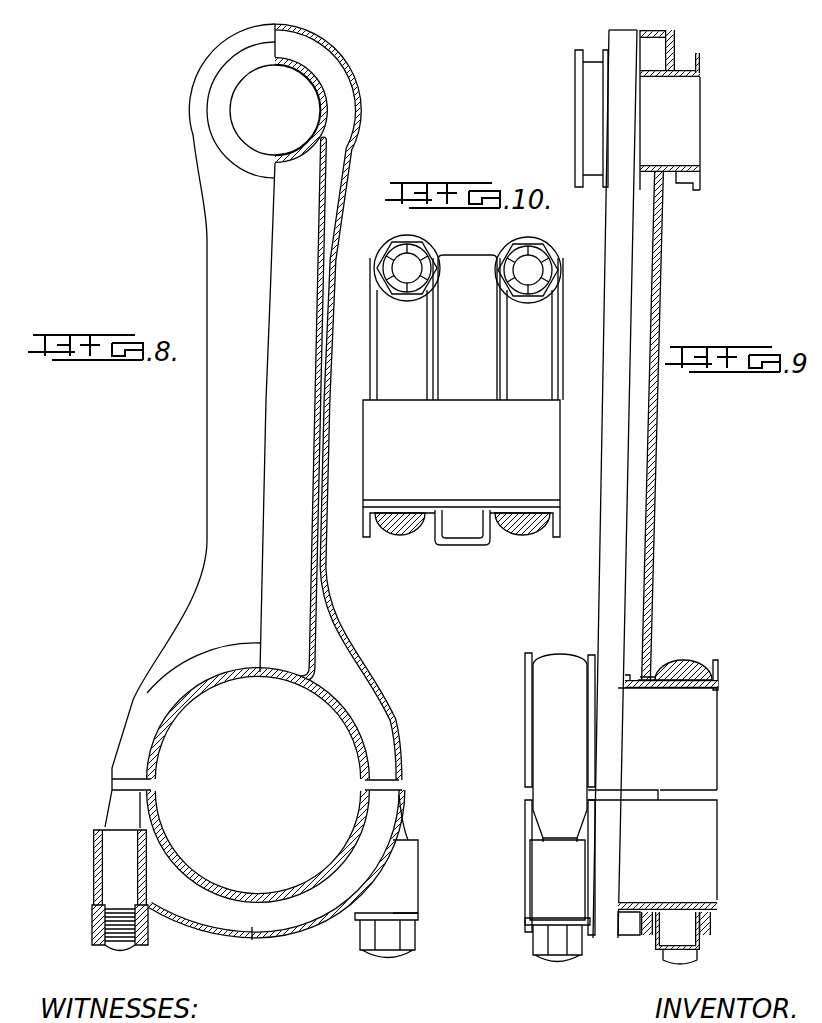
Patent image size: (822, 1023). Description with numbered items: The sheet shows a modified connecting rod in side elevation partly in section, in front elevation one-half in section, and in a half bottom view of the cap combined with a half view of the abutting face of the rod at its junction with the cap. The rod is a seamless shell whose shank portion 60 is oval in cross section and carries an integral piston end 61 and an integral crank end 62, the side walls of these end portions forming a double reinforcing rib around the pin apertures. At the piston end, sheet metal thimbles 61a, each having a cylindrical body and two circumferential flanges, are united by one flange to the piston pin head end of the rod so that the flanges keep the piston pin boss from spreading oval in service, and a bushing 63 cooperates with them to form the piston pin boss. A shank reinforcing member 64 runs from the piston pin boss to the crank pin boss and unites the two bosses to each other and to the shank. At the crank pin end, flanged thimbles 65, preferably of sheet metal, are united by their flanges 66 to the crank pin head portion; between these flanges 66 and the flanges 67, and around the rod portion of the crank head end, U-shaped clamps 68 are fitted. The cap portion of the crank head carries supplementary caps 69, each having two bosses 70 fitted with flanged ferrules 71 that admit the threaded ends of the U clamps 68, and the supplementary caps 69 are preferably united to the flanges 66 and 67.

In FIG. 8, the seamless shank portion 60 is at (190, 425).
In FIG. 9, the seamless shank portion 60 is at (615, 484).
In FIG. 8, the piston end 61 is at (236, 50).
In FIG. 9, the piston end 61 is at (628, 72).
In FIG. 9, the sheet metal thimbles 61a is at (593, 68).
In FIG. 8, the crank end 62 is at (203, 664).
In FIG. 9, the bushing 63 is at (670, 110).
In FIG. 8, the shank reinforcing member 64 is at (302, 409).
In FIG. 9, the shank reinforcing member 64 is at (657, 290).
In FIG. 9, the flanged thimbles 65 is at (540, 832).
In FIG. 10, the flanges 66 is at (493, 545).
In FIG. 9, the flanges 66 is at (594, 665).
In FIG. 8, the flanges 67 is at (337, 403).
In FIG. 10, the flanges 67 is at (371, 362).
In FIG. 9, the flanges 67 is at (530, 678).
In FIG. 8, the U-shaped clamps 68 is at (258, 773).
In FIG. 10, the U-shaped clamps 68 is at (397, 533).
In FIG. 9, the U-shaped clamps 68 is at (720, 652).
In FIG. 8, the supplementary caps 69 is at (247, 859).
In FIG. 10, the supplementary caps 69 is at (463, 381).
In FIG. 9, the supplementary caps 69 is at (702, 950).
In FIG. 8, the bosses 70 is at (399, 854).
In FIG. 9, the bosses 70 is at (557, 901).
In FIG. 8, the flanged ferrules 71 is at (96, 912).
In FIG. 10, the flanged ferrules 71 is at (467, 269).